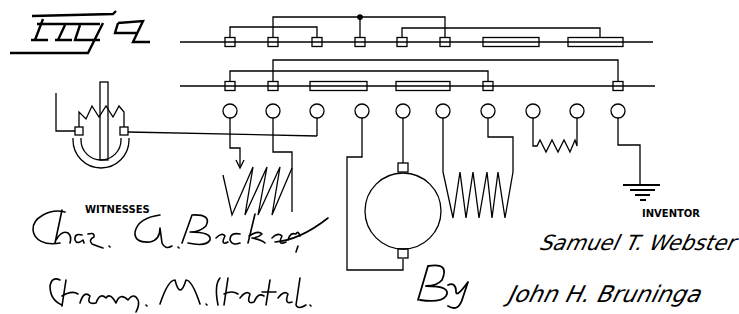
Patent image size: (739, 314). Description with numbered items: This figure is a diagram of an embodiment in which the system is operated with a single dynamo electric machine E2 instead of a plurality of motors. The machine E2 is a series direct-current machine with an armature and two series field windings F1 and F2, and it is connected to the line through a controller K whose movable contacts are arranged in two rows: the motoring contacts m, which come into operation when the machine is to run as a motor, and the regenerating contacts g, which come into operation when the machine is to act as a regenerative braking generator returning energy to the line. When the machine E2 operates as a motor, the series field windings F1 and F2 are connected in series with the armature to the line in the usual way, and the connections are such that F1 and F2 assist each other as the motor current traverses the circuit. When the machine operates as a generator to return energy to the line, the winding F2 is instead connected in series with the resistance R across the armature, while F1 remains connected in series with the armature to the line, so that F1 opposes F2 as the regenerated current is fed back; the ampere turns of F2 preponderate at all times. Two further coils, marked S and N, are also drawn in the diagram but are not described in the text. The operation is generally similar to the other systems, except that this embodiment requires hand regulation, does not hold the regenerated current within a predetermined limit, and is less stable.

The regenerating contacts g is at (431, 45).
The controller K is at (473, 47).
The motoring contacts m is at (434, 82).
The coil S is at (257, 166).
The series field winding F1 is at (296, 170).
The dynamo electric machine E2 is at (394, 194).
The coil N is at (478, 168).
The series field winding F2 is at (499, 185).
The resistance R is at (555, 147).